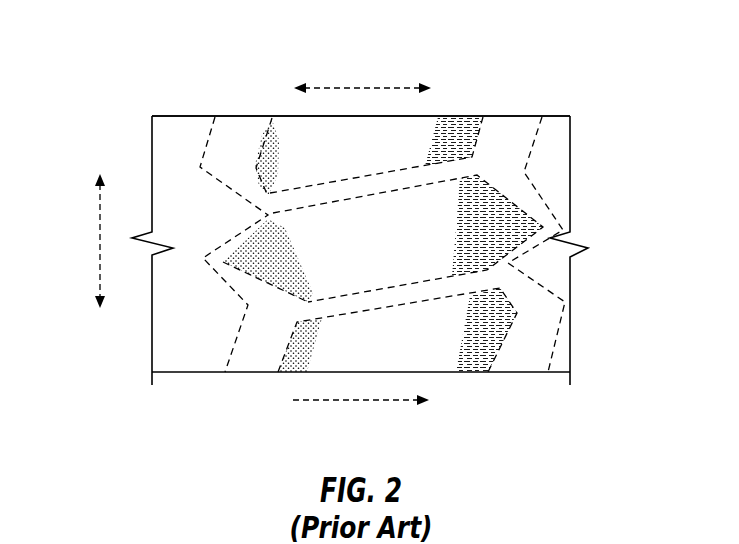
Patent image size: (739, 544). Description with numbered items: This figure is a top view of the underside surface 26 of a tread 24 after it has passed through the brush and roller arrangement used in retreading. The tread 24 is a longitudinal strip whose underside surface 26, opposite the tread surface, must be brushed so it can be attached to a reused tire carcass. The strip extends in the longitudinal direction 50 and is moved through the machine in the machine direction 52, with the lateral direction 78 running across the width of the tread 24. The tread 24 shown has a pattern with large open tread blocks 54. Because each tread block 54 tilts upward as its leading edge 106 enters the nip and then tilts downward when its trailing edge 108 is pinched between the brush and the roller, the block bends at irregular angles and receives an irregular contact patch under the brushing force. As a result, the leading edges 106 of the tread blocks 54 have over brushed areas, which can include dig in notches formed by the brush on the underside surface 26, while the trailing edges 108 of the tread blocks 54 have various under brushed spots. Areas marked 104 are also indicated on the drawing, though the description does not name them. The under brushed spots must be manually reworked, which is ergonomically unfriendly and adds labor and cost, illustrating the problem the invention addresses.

The tread 24 is at (247, 116).
The underside surface 26 is at (553, 142).
The longitudinal direction 50 is at (362, 88).
The machine direction 52 is at (362, 400).
The tread block 54 is at (418, 255).
The lateral direction 78 is at (100, 240).
The shoulder rib 104 is at (258, 357).
The leading edge 106 is at (503, 320).
The trailing edge 108 is at (275, 253).